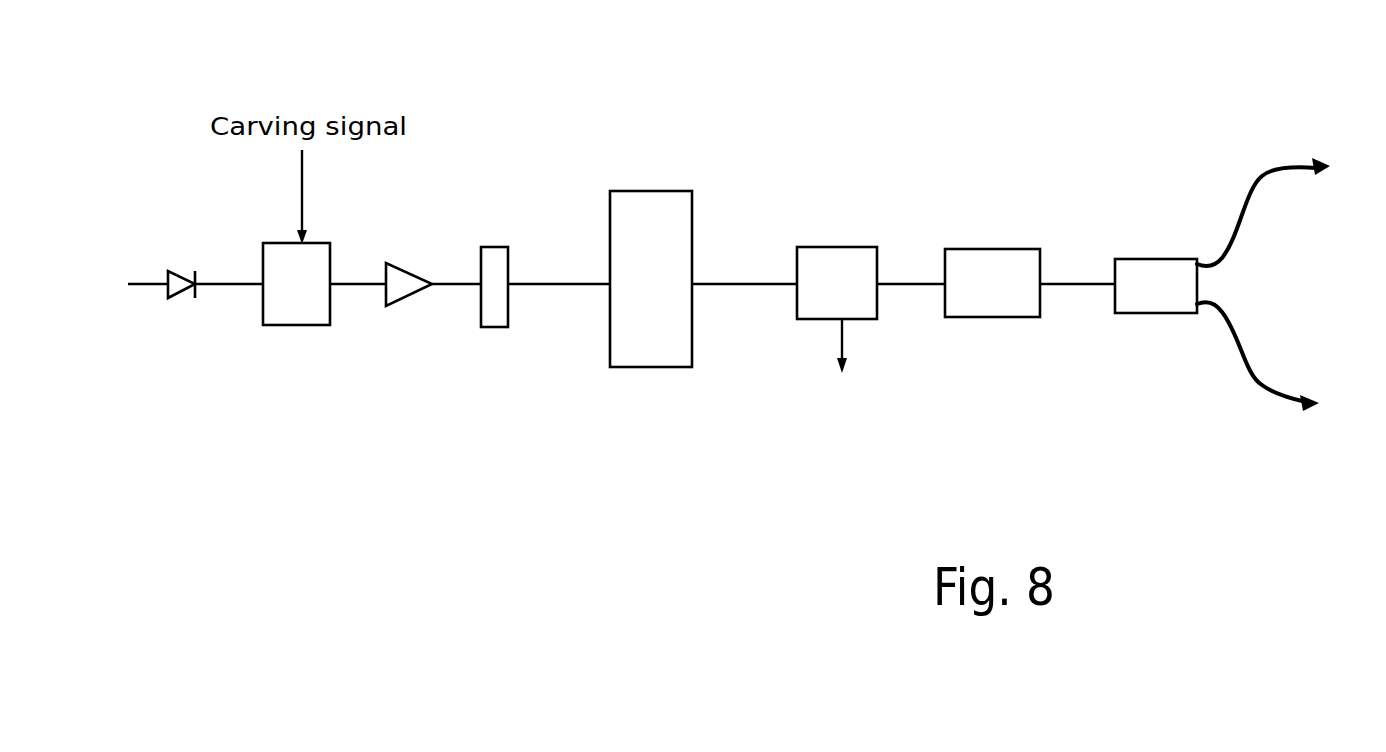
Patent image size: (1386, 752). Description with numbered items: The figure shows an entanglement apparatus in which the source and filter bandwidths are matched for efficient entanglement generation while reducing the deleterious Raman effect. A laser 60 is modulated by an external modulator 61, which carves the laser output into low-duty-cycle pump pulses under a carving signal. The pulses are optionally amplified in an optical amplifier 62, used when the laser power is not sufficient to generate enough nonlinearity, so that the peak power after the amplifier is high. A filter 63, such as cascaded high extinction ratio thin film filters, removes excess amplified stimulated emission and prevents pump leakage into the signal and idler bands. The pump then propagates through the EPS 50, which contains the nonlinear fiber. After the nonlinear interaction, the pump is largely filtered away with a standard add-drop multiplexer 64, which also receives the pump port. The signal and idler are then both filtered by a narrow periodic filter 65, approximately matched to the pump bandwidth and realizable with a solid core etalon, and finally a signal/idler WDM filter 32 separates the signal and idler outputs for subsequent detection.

The laser 60 is at (174, 263).
The external modulator 61 is at (296, 306).
The optical amplifier 62 is at (398, 307).
The filter 63 is at (480, 266).
The EPS 50 is at (651, 261).
The add-drop multiplexer 64 is at (837, 309).
The narrow periodic filter 65 is at (992, 264).
The signal/idler WDM filter 32 is at (1222, 282).